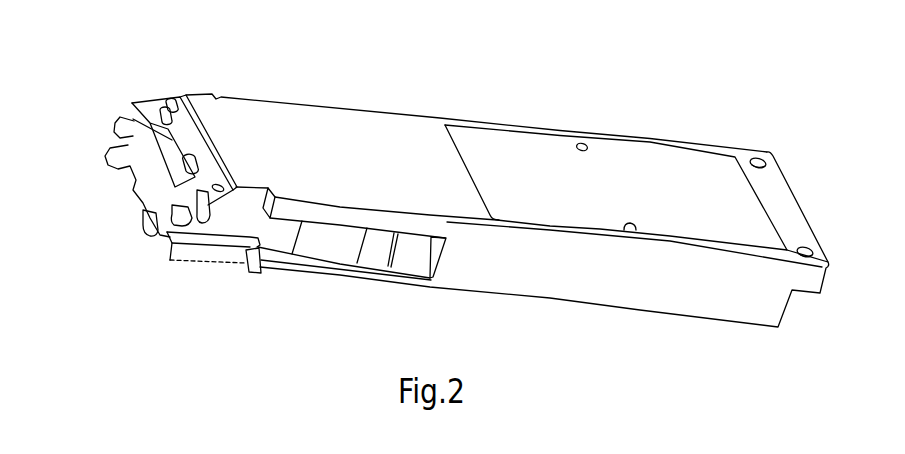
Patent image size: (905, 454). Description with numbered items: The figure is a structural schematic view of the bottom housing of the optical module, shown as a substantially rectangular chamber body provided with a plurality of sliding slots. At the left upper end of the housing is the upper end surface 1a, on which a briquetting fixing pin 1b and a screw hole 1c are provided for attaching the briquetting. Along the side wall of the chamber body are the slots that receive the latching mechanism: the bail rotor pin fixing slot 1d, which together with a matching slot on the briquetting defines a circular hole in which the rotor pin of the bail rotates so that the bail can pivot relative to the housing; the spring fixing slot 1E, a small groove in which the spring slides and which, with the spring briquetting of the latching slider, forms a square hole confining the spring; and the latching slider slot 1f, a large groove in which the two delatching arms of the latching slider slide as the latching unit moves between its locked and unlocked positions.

The upper end surface 1a is at (133, 118).
The briquetting fixing pin 1b is at (157, 103).
The screw hole 1c is at (173, 103).
The bail rotor pin fixing slot 1d is at (175, 236).
The spring fixing slot 1E is at (200, 238).
The latching slider slot 1f is at (362, 243).